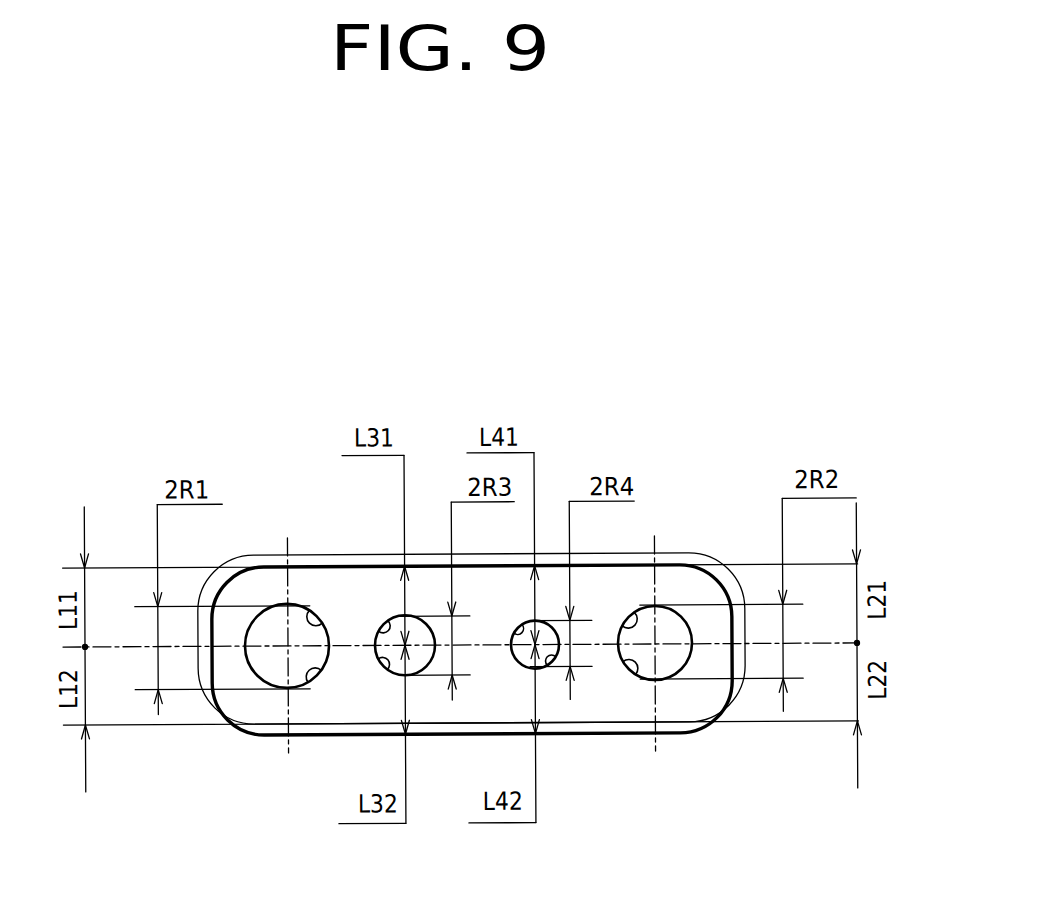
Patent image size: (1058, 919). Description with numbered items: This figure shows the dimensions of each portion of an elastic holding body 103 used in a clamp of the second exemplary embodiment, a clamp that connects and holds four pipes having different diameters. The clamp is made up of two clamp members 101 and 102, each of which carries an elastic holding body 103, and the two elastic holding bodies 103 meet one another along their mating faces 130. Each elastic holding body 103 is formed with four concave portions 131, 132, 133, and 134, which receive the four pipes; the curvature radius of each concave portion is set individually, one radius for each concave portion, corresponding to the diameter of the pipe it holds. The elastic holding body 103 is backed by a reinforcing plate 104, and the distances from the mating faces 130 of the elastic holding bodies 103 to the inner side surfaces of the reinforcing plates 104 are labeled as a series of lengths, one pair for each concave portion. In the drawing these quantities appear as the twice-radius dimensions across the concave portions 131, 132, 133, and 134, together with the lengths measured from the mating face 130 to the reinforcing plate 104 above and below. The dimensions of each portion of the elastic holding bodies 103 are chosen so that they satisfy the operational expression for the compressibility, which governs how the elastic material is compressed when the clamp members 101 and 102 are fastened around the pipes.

The clamp member 101 is at (681, 543).
The clamp member 102 is at (689, 741).
The elastic holding body 103 is at (255, 580).
The reinforcing plate 104 is at (273, 555).
The mating face 130 is at (348, 643).
The concave portion 131 is at (321, 619).
The concave portion 132 is at (628, 623).
The concave portion 133 is at (381, 628).
The concave portion 134 is at (517, 629).